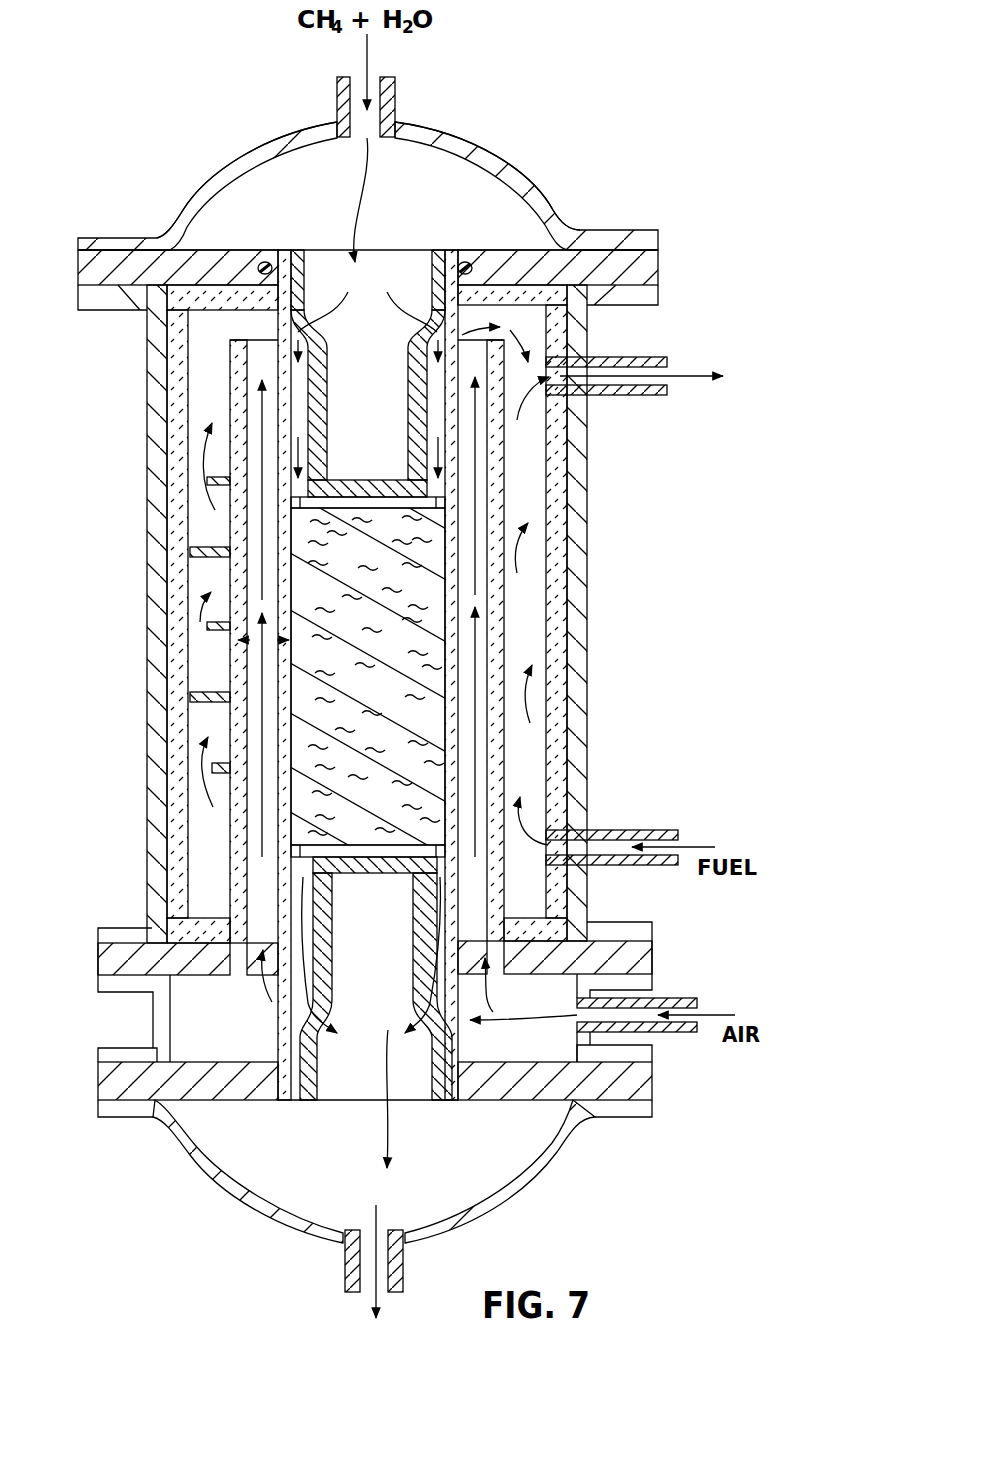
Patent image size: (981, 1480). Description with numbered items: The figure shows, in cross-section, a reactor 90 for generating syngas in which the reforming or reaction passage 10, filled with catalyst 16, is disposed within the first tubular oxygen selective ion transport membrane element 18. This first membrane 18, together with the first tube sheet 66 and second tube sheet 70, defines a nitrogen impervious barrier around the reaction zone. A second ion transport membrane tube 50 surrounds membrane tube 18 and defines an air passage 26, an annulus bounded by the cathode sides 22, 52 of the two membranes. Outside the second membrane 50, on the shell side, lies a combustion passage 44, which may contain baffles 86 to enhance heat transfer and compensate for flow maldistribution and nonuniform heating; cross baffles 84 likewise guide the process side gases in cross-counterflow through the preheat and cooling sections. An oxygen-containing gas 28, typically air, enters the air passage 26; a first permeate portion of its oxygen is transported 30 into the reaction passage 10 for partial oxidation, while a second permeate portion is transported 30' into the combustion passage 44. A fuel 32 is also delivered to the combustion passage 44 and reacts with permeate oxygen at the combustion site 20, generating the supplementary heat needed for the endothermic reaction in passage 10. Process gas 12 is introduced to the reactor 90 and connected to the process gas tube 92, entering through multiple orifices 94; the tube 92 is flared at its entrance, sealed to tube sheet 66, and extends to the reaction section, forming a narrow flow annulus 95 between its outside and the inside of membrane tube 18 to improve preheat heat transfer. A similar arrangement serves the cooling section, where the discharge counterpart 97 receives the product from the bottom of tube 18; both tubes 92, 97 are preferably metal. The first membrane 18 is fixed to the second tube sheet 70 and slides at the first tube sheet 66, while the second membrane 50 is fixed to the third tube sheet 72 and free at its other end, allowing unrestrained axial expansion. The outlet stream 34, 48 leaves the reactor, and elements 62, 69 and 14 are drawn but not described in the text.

The reactor 90 is at (197, 150).
The process gas 12 is at (362, 60).
The top dome head 69 is at (520, 184).
The first tube sheet 66 is at (635, 262).
The reformate outlet 34 is at (693, 374).
The reformate outlet passage 48 is at (693, 374).
The orifices 94 is at (262, 328).
The process gas tube 92 is at (317, 394).
The narrow flow annulus 95 is at (437, 418).
The cross baffles 84 is at (207, 481).
The insulation 62 is at (585, 553).
The transport of first permeate portion 30 is at (198, 641).
The combustion passage 44 is at (205, 597).
The combustion site 20 is at (527, 600).
The transport of second permeate portion 30' is at (166, 636).
The second ion transport membrane tube 50 is at (237, 664).
The reforming passage 10 is at (405, 668).
The catalyst 16 is at (432, 700).
The first tubular oxygen selective ion transport membrane element 18 is at (457, 742).
The cathode side 22 is at (467, 790).
The air passage 26 is at (258, 717).
The baffles 86 is at (209, 782).
The cathode side 52 is at (249, 847).
The third tube sheet 72 is at (98, 932).
The fuel 32 is at (699, 845).
The oxygen-containing gas 28 is at (719, 1013).
The second tube sheet 70 is at (640, 1075).
The discharge counterpart 97 is at (302, 1093).
The exhaust outlet 14 is at (395, 1226).